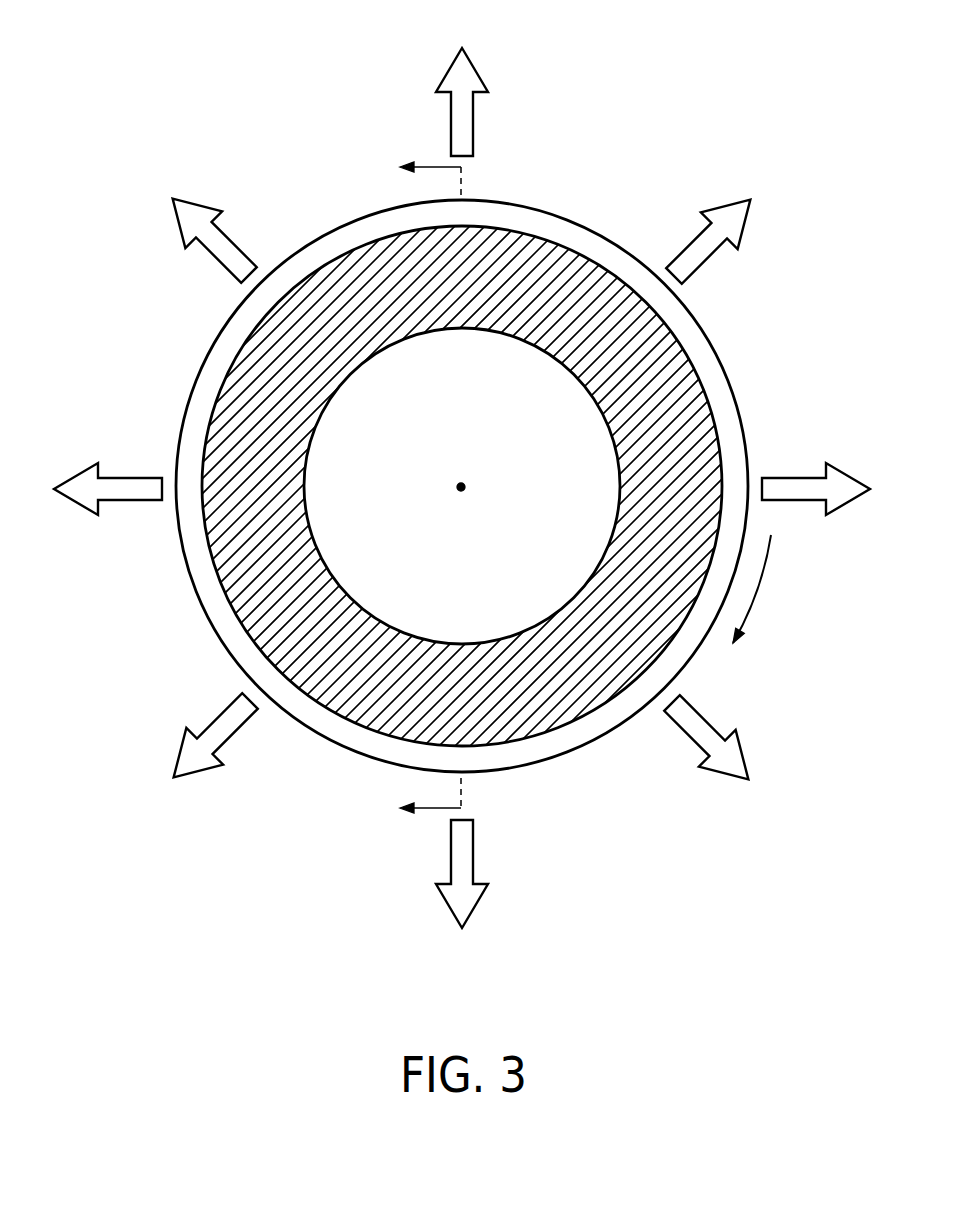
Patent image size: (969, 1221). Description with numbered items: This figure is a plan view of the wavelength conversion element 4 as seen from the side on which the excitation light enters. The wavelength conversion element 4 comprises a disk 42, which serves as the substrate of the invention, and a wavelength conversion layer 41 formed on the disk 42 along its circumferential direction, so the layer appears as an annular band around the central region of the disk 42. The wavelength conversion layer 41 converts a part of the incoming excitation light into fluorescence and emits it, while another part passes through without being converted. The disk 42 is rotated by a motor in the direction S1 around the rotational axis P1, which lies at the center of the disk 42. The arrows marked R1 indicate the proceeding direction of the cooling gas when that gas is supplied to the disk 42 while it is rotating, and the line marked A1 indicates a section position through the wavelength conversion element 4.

The wavelength conversion element 4 is at (641, 186).
The wavelength conversion layer 41 is at (533, 262).
The disk 42 is at (572, 450).
The rotational axis P1 is at (465, 484).
The section line A1 is at (418, 487).
The direction S1 is at (762, 589).
The radial direction R1 is at (447, 80).